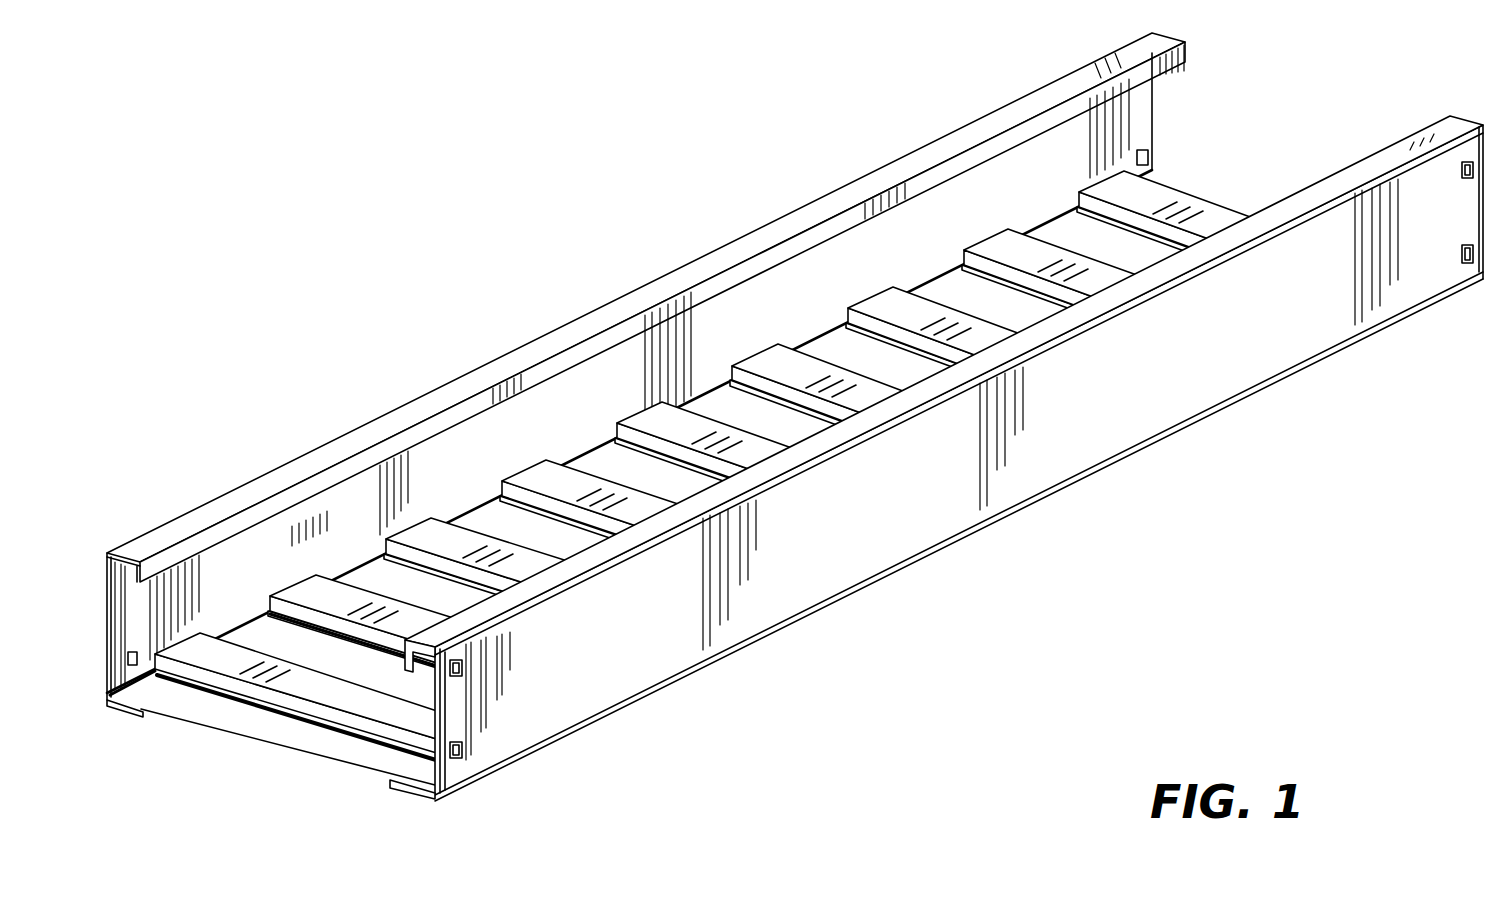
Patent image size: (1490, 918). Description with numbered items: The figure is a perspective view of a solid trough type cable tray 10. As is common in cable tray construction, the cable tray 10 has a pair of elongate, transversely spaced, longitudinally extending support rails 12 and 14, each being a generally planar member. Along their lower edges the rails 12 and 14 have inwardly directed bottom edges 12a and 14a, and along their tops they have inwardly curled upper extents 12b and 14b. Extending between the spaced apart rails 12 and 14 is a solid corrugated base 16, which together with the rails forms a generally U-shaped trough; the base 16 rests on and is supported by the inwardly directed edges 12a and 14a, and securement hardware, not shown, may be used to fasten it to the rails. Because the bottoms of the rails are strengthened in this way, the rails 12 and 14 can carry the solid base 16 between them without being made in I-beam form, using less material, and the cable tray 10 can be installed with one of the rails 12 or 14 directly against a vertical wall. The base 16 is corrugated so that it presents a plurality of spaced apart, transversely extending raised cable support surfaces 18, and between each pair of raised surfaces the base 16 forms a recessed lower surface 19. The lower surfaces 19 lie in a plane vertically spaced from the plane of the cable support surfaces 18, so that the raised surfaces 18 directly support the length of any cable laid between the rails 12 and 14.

The solid trough type cable tray 10 is at (795, 445).
The support rail 12 is at (646, 408).
The inwardly directed bottom edge 12a is at (117, 713).
The inwardly curled upper extent 12b is at (182, 552).
The support rail 14 is at (936, 486).
The inwardly directed bottom edge 14a is at (403, 795).
The inwardly curled upper extent 14b is at (471, 621).
The solid corrugated base 16 is at (702, 487).
The raised cable support surface 18 is at (897, 295).
The recessed lower surface 19 is at (845, 345).